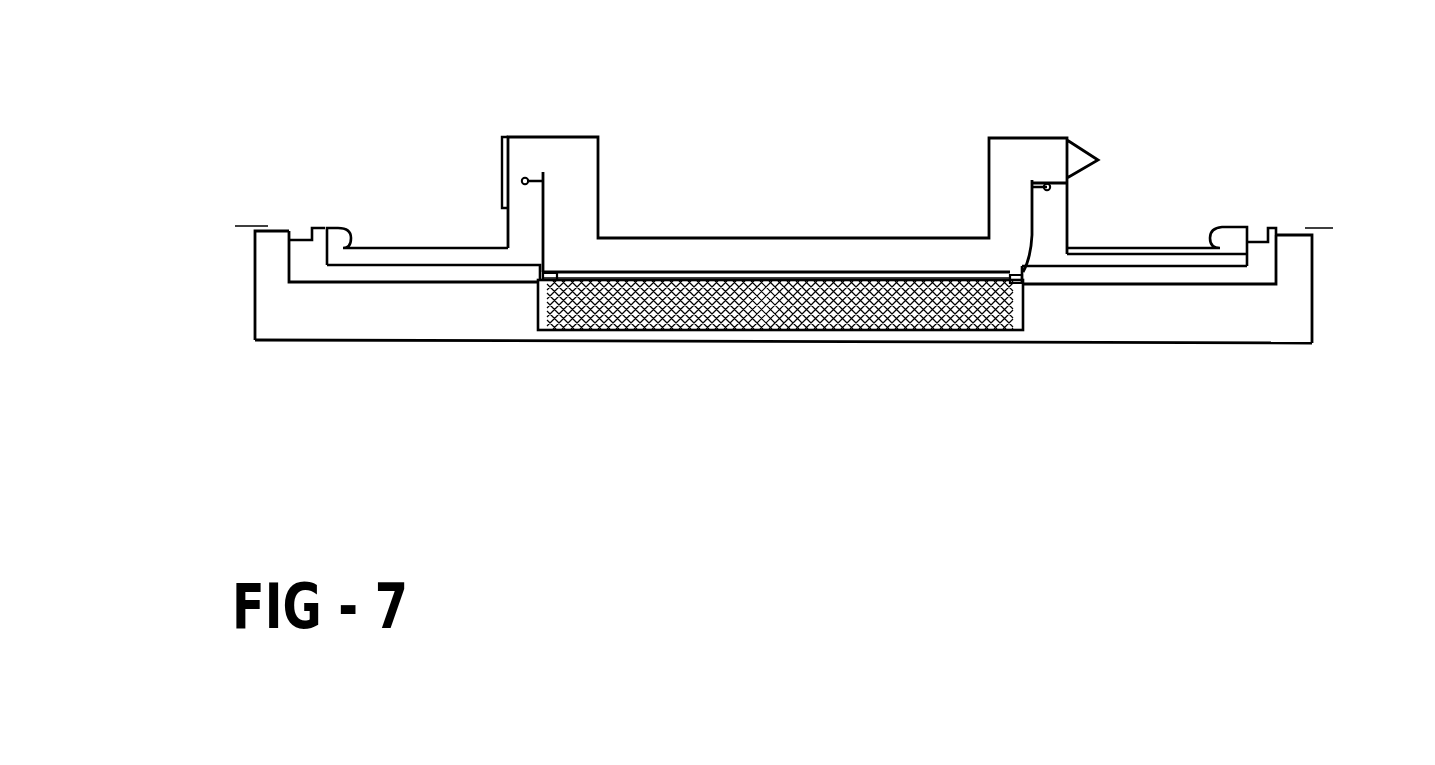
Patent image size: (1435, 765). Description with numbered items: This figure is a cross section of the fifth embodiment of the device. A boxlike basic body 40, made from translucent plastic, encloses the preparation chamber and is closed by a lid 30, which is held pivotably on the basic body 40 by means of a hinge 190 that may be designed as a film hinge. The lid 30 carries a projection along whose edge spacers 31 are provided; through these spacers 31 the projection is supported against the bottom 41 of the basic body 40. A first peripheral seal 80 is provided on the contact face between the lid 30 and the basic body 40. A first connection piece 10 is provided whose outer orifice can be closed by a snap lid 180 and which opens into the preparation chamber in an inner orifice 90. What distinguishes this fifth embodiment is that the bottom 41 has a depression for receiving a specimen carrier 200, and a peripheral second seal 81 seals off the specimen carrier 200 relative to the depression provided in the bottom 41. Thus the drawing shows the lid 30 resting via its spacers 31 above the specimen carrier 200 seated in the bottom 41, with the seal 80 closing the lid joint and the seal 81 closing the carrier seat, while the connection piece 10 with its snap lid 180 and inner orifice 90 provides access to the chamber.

The first connection piece 10 is at (1145, 258).
The lid 30 is at (997, 196).
The spacers 31 is at (572, 270).
The basic body 40 is at (1280, 330).
The bottom 41 is at (867, 333).
The first peripheral seal 80 is at (528, 181).
The peripheral second seal 81 is at (533, 292).
The inner orifice 90 is at (527, 273).
The snap lid 180 is at (263, 228).
The hinge 190 is at (503, 182).
The specimen carrier 200 is at (693, 310).